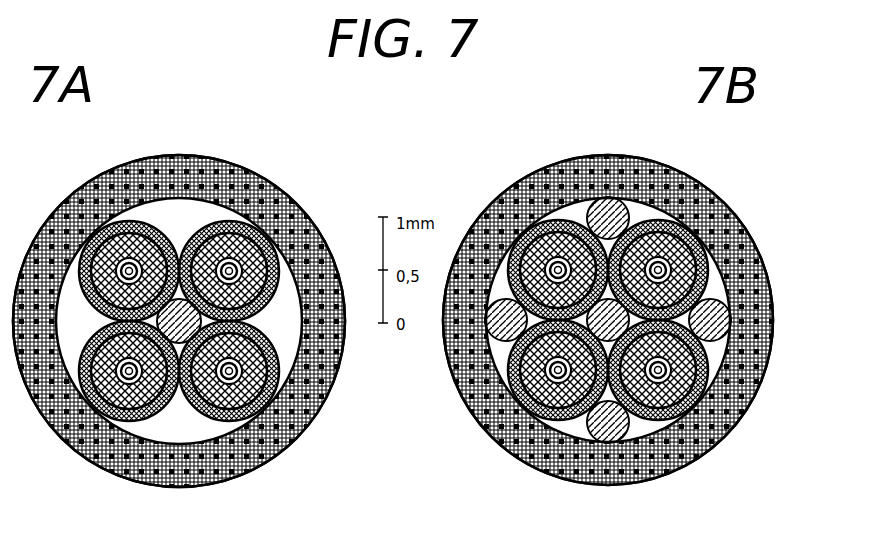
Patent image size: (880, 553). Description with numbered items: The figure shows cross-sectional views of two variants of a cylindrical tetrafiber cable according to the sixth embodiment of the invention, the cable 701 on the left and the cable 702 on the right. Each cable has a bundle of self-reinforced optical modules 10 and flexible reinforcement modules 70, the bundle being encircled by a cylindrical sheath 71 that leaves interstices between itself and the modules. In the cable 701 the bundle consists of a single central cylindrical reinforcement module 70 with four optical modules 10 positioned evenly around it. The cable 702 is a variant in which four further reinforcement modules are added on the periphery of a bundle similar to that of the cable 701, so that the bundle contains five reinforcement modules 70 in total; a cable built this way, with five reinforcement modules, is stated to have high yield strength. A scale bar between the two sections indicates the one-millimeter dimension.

The tetrafiber cable 701 is at (302, 170).
The tetrafiber cable 702 is at (748, 180).
The outer jacket / sheath 71 is at (62, 207).
The self-reinforced optical module 10 is at (250, 226).
The central cylindrical reinforcement module 70 is at (180, 345).